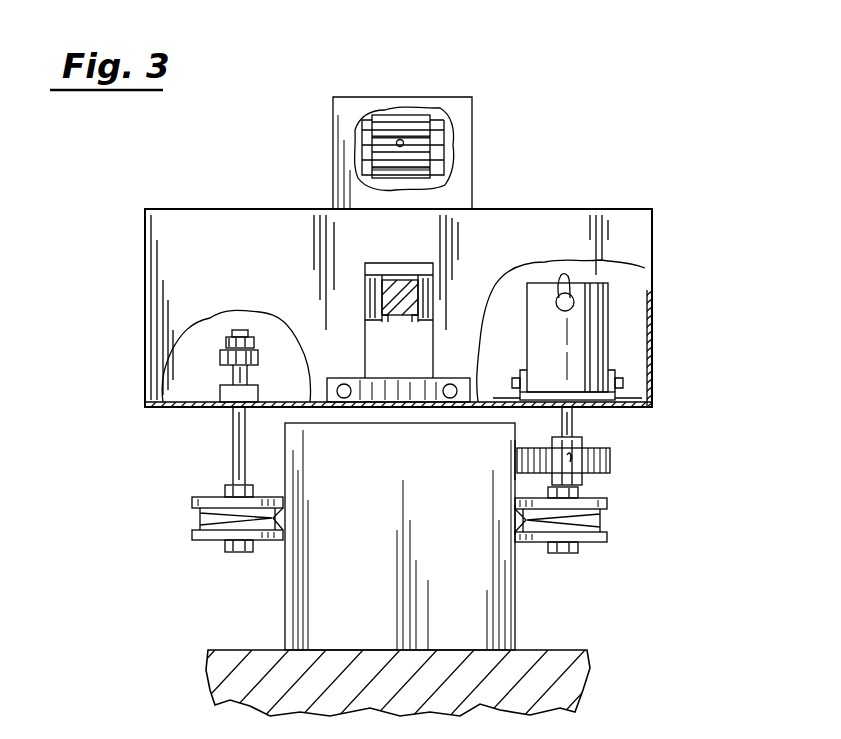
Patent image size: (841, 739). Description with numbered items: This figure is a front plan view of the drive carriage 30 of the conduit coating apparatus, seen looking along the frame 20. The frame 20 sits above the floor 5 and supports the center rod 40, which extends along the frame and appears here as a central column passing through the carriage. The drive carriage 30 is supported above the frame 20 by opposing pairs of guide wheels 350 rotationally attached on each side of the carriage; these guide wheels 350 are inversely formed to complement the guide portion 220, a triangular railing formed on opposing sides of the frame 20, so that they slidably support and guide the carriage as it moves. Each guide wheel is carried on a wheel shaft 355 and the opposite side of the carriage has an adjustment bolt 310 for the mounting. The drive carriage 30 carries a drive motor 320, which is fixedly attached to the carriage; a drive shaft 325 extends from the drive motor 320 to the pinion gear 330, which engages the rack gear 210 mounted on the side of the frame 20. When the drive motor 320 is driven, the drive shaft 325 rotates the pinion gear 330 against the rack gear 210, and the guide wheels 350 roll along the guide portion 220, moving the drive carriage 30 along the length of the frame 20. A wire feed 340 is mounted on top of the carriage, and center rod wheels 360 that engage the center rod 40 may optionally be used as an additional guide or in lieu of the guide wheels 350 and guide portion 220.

The floor 5 is at (505, 678).
The frame 20 is at (335, 595).
The drive carriage 30 is at (190, 277).
The center rod 40 is at (395, 290).
The rack gear 210 is at (515, 455).
The guide portion 220 is at (516, 522).
The adjustment bolt 310 is at (228, 373).
The drive motor 320 is at (590, 342).
The drive shaft 325 is at (580, 426).
The pinion gear 330 is at (610, 462).
The wire feed 340 is at (415, 127).
The guide wheels 350 is at (205, 510).
The wheel shaft 355 is at (240, 463).
The center rod wheels 360 is at (440, 298).